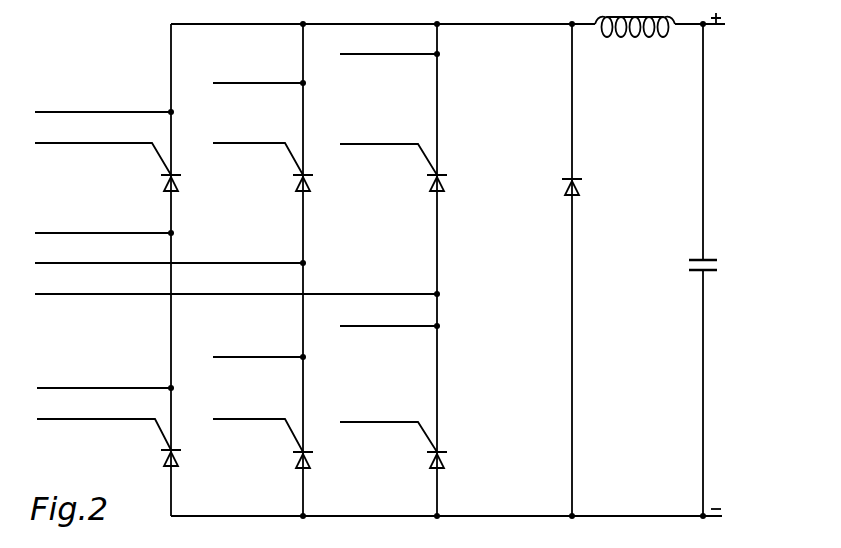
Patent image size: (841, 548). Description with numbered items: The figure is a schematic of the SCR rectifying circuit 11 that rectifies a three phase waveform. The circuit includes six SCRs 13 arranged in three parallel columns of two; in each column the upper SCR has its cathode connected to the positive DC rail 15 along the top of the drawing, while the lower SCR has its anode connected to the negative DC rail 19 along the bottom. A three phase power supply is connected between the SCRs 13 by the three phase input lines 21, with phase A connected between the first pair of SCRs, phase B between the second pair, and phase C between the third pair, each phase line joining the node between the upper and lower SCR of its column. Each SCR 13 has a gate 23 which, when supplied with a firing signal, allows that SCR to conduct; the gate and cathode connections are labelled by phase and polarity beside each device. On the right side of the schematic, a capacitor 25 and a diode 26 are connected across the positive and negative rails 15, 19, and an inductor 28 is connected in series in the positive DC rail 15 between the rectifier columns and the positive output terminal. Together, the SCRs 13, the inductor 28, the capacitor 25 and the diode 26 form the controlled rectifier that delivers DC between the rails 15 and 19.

The SCR rectifying circuit 11 is at (614, 163).
The SCRs 13 is at (179, 183).
The positive DC rail 15 is at (690, 28).
The negative DC rail 19 is at (620, 515).
The three-phase AC input lines 21 is at (73, 296).
The gate 23 is at (166, 172).
The capacitor 25 is at (700, 258).
The diode 26 is at (567, 197).
The inductor 28 is at (631, 36).